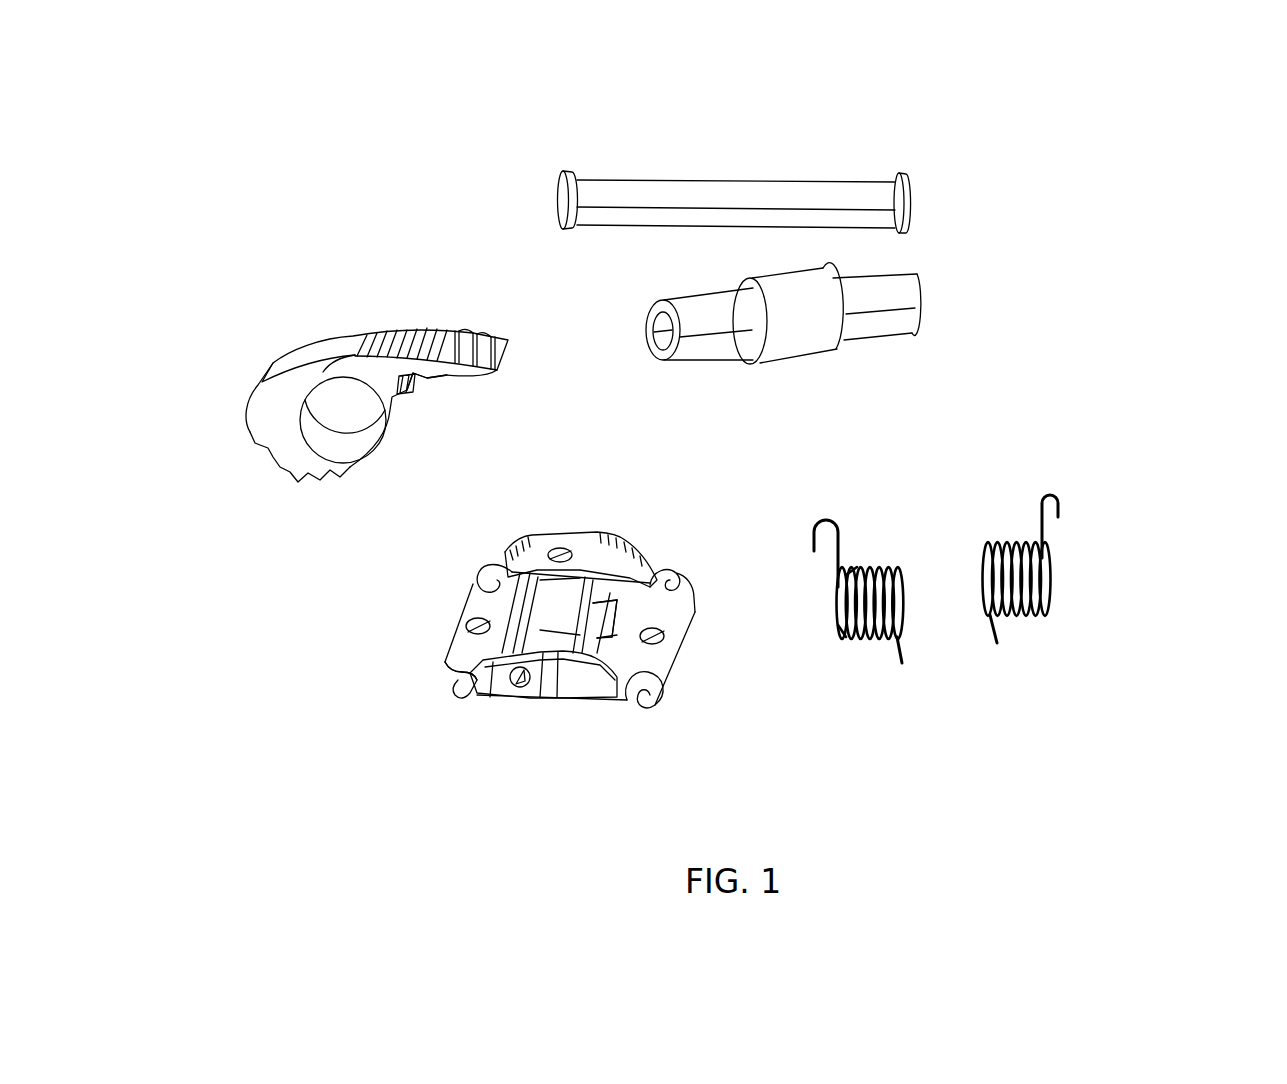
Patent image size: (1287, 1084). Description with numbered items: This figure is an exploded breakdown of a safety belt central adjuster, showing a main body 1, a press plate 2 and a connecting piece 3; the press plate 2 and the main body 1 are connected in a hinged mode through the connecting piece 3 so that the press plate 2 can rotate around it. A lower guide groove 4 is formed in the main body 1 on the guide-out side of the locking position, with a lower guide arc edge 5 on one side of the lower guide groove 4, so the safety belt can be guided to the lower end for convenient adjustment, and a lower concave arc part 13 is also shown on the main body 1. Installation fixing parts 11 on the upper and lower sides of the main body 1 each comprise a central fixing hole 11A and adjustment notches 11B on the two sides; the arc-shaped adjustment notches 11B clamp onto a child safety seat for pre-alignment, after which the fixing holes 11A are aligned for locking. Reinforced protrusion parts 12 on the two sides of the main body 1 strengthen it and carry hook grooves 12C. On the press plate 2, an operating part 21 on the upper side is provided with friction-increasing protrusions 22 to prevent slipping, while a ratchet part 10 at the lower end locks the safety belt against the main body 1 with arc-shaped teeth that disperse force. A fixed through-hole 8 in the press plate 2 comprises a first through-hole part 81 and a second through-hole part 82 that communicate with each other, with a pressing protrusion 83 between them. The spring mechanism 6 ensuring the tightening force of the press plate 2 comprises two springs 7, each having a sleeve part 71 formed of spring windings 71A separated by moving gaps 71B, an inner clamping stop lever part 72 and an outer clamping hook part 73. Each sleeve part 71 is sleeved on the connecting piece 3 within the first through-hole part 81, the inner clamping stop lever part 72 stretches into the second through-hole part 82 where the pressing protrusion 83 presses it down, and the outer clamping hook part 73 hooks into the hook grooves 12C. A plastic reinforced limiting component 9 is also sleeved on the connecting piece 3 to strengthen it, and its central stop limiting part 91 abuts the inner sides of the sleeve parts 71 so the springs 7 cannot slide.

The main body 1 is at (527, 612).
The press plate 2 is at (349, 381).
The connecting piece 3 is at (757, 203).
The lower guide groove 4 is at (618, 613).
The lower guide arc edge 5 is at (597, 620).
The spring mechanism 6 is at (1011, 559).
The spring 7 is at (1053, 497).
The fixed through-hole 8 is at (305, 438).
The reinforced limiting component 9 is at (812, 287).
The ratchet part 10 is at (330, 483).
The installation fixing part 11 is at (527, 689).
The fixing hole 11A is at (472, 628).
The adjustment notch 11B is at (463, 678).
The reinforced protrusion part 12 is at (603, 609).
The hook groove 12C is at (575, 537).
The lower concave arc part 13 is at (552, 608).
The operating part 21 is at (423, 350).
The friction-increasing protrusion 22 is at (442, 337).
The sleeve part 71 is at (861, 600).
The spring winding 71A is at (857, 567).
The moving gap 71B is at (840, 637).
The inner clamping stop lever part 72 is at (900, 630).
The outer clamping hook part 73 is at (830, 527).
The first through-hole part 81 is at (350, 410).
The second through-hole part 82 is at (407, 387).
The pressing protrusion 83 is at (383, 375).
The stop limiting part 91 is at (777, 300).